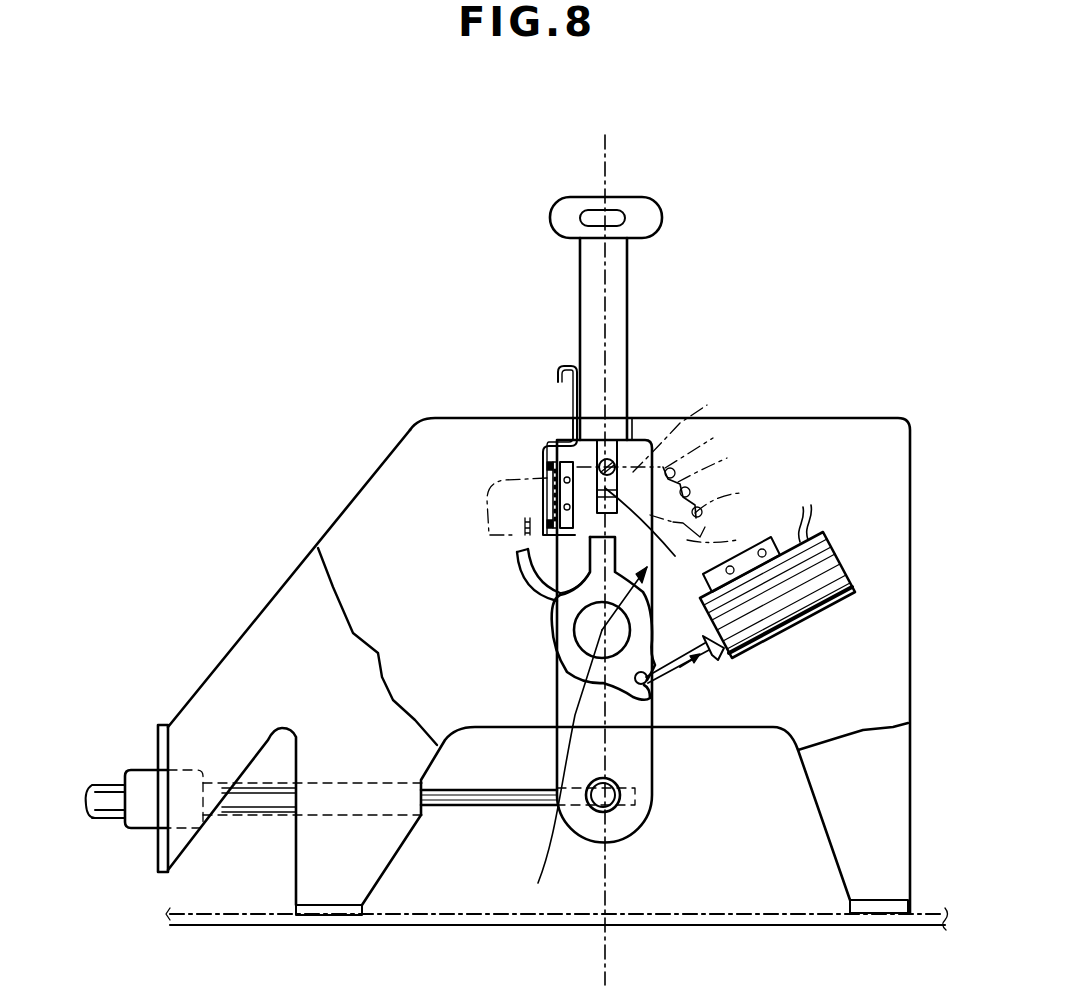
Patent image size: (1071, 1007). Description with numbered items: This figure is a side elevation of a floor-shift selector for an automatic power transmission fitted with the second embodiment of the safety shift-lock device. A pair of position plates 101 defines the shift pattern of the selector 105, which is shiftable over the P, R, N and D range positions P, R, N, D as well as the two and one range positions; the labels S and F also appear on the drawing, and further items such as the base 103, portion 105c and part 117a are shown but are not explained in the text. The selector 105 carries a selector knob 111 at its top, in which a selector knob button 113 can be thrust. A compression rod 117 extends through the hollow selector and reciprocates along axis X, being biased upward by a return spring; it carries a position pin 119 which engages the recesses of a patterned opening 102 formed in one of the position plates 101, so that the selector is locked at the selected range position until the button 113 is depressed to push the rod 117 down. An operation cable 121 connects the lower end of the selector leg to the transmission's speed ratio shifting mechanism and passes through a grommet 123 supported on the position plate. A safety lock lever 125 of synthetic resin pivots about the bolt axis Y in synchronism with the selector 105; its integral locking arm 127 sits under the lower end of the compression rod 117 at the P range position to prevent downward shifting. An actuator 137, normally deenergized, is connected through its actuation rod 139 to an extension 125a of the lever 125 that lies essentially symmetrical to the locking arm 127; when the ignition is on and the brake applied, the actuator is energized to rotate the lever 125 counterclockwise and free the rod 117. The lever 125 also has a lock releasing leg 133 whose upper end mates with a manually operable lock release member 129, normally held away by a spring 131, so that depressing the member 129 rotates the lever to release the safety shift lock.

The position plates 101 is at (333, 537).
The patterned opening 102 is at (703, 506).
The base plate 103 is at (763, 927).
The selector 105 is at (627, 265).
The lower lever portion 105c is at (645, 780).
The selector knob 111 is at (568, 197).
The selector knob button 113 is at (617, 214).
The compression rod 117 is at (535, 586).
The spring lever arm 117a is at (657, 553).
The position pin 119 is at (612, 460).
The operation cable 121 is at (470, 807).
The grommet 123 is at (183, 770).
The safety lock lever 125 is at (595, 683).
The extension 125a is at (650, 688).
The locking arm 127 is at (598, 493).
The lock release member 129 is at (563, 368).
The spring 131 is at (547, 462).
The lock releasing leg 133 is at (517, 556).
The actuator 137 is at (790, 631).
The actuation rod 139 is at (702, 661).
The P range position P is at (618, 465).
The N range position N is at (682, 428).
The D range position D is at (701, 447).
The second position S is at (712, 467).
The forward position F is at (726, 496).
The R range position R is at (640, 606).
The axis X- X is at (617, 559).
The axis Y- Y is at (540, 765).